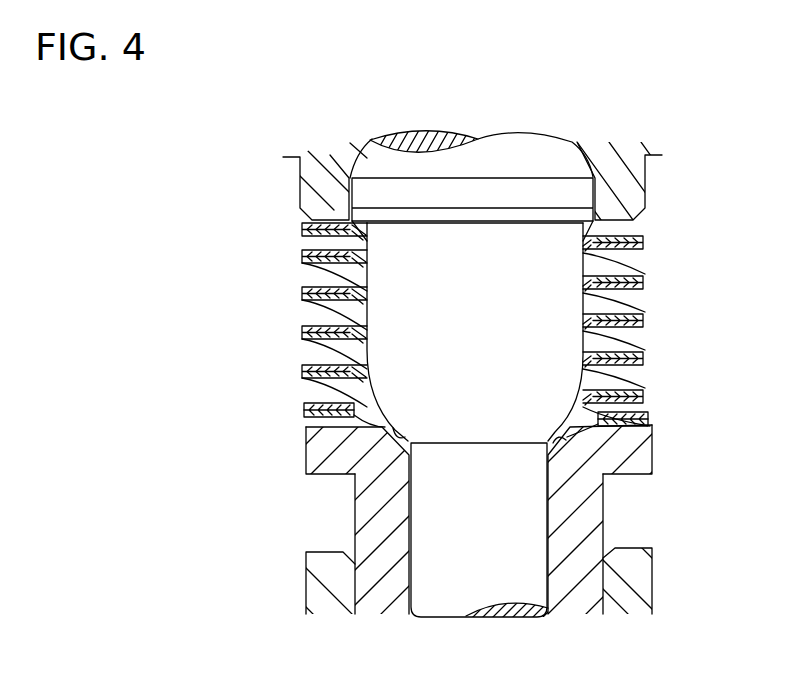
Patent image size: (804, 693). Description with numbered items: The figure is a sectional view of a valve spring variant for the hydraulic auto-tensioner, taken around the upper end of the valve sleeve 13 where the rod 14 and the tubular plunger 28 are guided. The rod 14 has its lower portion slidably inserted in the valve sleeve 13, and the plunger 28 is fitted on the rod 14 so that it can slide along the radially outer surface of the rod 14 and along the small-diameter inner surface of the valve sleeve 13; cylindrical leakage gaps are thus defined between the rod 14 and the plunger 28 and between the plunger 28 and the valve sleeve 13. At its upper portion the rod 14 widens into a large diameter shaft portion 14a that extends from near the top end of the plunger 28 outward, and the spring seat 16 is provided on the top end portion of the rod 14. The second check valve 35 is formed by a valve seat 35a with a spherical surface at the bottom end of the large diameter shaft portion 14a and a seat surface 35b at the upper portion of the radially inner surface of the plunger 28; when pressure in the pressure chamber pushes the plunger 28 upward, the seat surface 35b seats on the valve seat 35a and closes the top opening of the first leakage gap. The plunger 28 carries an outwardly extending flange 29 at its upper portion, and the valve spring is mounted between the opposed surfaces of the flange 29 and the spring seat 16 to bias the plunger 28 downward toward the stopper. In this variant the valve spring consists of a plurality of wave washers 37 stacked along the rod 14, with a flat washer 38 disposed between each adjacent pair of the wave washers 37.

The spring seat 16 is at (310, 152).
The large diameter shaft portion 14a is at (395, 248).
The wave washers 37 is at (305, 345).
The flat washer 38 is at (645, 340).
The second check valve 35 is at (598, 433).
The valve seat 35a is at (400, 432).
The seat surface 35b is at (560, 439).
The flange 29 is at (318, 448).
The plunger 28 is at (360, 518).
The rod 14 is at (547, 530).
The valve sleeve 13 is at (307, 587).